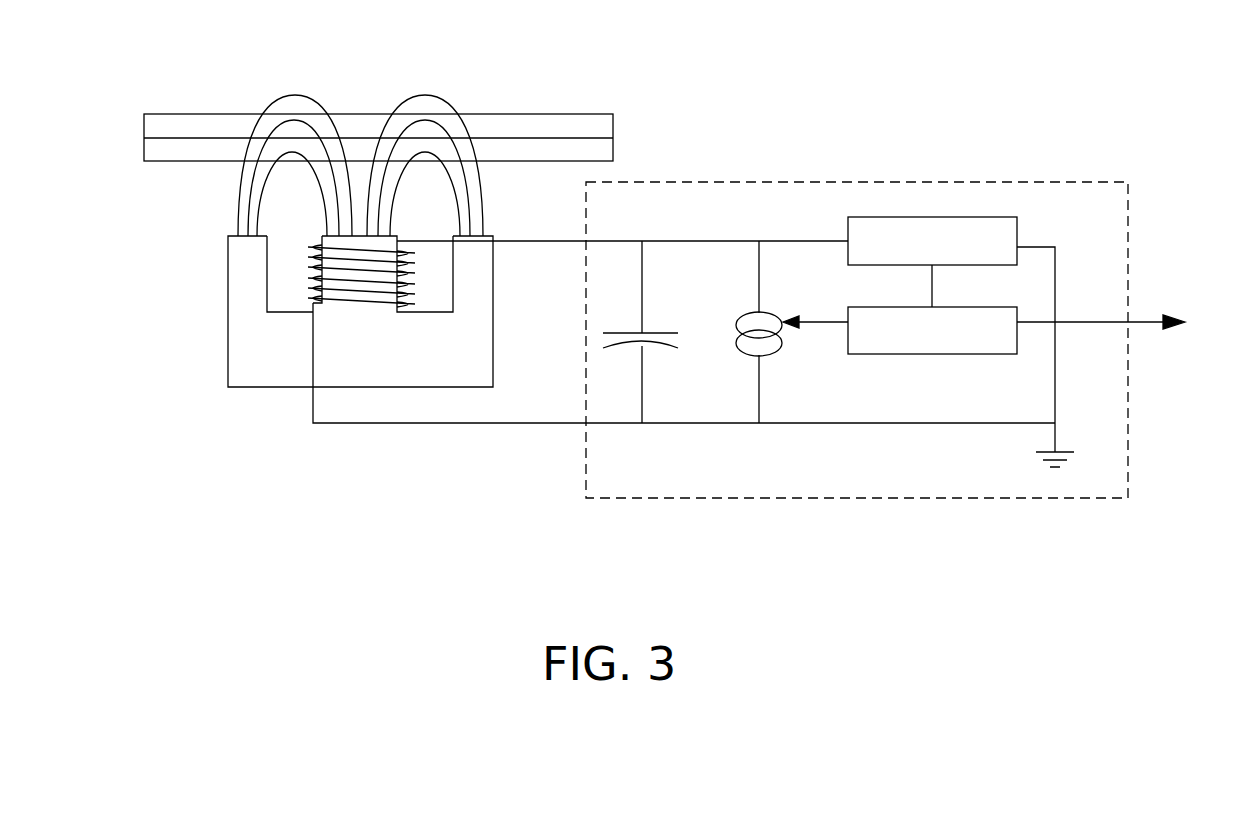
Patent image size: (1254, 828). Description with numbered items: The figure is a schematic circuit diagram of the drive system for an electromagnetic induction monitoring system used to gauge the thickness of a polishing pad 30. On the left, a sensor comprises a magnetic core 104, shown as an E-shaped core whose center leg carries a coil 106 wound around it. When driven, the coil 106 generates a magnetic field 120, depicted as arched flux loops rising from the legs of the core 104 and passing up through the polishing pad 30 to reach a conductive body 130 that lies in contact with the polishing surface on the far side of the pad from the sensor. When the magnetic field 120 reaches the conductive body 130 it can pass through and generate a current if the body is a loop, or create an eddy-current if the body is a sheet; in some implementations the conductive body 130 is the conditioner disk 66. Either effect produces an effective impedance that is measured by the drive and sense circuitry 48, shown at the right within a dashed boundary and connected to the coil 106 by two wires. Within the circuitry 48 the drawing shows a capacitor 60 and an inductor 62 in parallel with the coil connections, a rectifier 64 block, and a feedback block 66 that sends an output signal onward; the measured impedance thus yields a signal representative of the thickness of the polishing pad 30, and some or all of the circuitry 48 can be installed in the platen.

The polishing pad 30 is at (613, 156).
The conductive body 130 is at (613, 131).
The magnetic field 120 is at (252, 203).
The magnetic core 104 is at (220, 362).
The coil 106 is at (316, 270).
The drive and sense circuitry 48 is at (1128, 470).
The capacitor 60 is at (657, 333).
The inductor 62 is at (768, 357).
The rectifier 64 is at (1017, 226).
The conditioner disk 66 is at (903, 355).